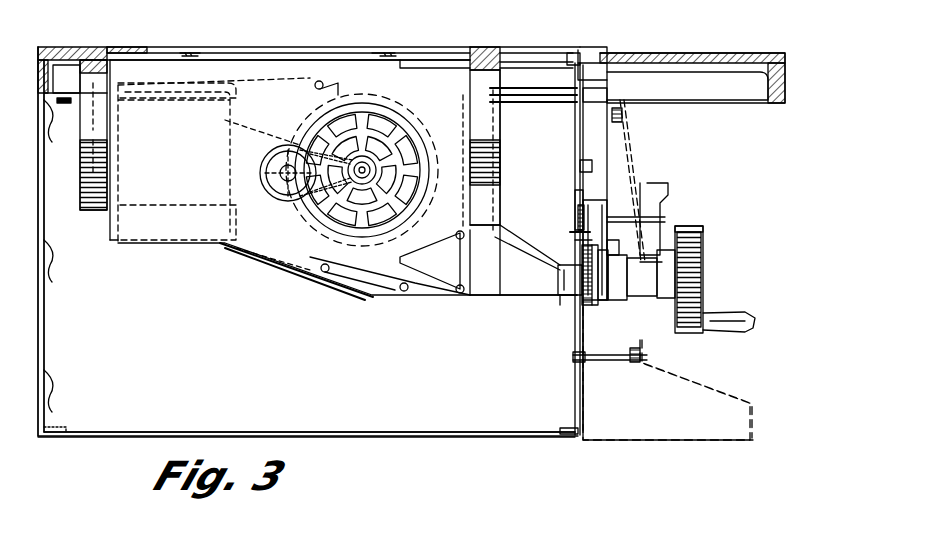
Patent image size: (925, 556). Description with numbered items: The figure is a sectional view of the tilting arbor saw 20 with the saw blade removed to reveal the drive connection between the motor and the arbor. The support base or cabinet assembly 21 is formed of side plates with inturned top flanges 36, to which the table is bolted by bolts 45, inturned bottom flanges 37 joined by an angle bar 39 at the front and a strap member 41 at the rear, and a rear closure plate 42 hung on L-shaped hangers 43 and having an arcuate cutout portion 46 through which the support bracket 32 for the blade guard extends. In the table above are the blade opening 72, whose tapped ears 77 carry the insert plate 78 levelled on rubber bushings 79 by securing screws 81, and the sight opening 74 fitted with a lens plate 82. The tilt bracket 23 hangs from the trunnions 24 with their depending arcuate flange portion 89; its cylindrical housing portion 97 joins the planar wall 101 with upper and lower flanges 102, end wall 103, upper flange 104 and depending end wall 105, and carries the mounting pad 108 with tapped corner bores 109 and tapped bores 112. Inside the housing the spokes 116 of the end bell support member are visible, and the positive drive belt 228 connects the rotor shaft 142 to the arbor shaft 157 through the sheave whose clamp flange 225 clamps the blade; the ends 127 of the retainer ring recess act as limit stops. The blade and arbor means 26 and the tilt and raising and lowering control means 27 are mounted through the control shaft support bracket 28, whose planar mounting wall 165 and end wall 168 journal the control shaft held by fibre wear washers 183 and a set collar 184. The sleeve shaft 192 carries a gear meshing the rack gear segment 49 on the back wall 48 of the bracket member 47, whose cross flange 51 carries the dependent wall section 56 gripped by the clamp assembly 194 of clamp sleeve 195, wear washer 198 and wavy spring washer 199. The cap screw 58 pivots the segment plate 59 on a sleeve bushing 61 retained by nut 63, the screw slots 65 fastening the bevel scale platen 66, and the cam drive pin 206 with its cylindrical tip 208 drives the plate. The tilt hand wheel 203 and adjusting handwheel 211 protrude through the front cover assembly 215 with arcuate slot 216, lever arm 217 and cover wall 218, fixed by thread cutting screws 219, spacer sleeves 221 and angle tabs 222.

The tilting arbor saw 20 is at (175, 434).
The support base or cabinet assembly 21 is at (98, 426).
The tilt bracket 23 is at (225, 240).
The trunnions 24 is at (505, 153).
The blade and arbor means 26 is at (304, 261).
The tilt and raising and lowering control means 27 is at (495, 303).
The control shaft support bracket 28 is at (512, 240).
The support bracket 32 is at (704, 53).
The inturned top flanges 36 is at (82, 93).
The inturned bottom flanges 37 is at (262, 440).
The angle bar 39 is at (565, 428).
The strap member 41 is at (52, 427).
The rear closure plate 42 is at (40, 268).
The L-shaped hangers 43 is at (44, 132).
The bolts 45 is at (70, 104).
The arcuate cutout portion 46 is at (40, 165).
The bracket member 47 is at (572, 232).
The back wall 48 is at (575, 242).
The rack gear segment 49 is at (582, 254).
The cross flange 51 is at (606, 170).
The dependent wall section 56 is at (605, 206).
The cap screw 58 is at (640, 219).
The segment plate 59 is at (576, 135).
The sleeve bushing 61 is at (576, 200).
The nut 63 is at (576, 222).
The screw slots 65 is at (586, 63).
The bevel scale platen 66 is at (600, 50).
The blade opening 72 is at (460, 52).
The sight opening 74 is at (575, 53).
The tapped ears 77 is at (185, 60).
The insert plate 78 is at (140, 47).
The rubber bushings 79 is at (198, 56).
The securing screws 81 is at (192, 50).
The lens plate 82 is at (592, 48).
The depending arcuate flange portion 89 is at (94, 139).
The cylindrical housing portion 97 is at (280, 125).
The planar wall 101 is at (214, 160).
The upper and lower flanges 102 is at (232, 82).
The end wall 103 is at (122, 120).
The upper flange 104 is at (436, 66).
The depending end wall 105 is at (478, 137).
The mounting pad 108 is at (398, 306).
The tapped corner bores 109 is at (458, 280).
The tapped bores 112 is at (315, 88).
The spokes 116 is at (330, 84).
The ends of arcuate recess 127 is at (270, 160).
The rotor shaft 142 is at (362, 168).
The arbor shaft 157 is at (280, 181).
The planar mounting wall 165 is at (520, 182).
The end wall 168 is at (560, 297).
The fibre wear washer 183 is at (584, 300).
The set collar 184 is at (558, 270).
The sleeve shaft 192 is at (592, 305).
The clamp assembly 194 is at (661, 179).
The clamp sleeve 195 is at (600, 250).
The wear washer 198 is at (612, 305).
The wavy spring washer 199 is at (620, 303).
The tilt hand wheel 203 is at (688, 226).
The cam drive pin 206 is at (540, 100).
The cylindrical tip 208 is at (611, 96).
The adjusting handwheel 211 is at (704, 246).
The front cover assembly 215 is at (715, 390).
The arcuate slot 216 is at (662, 298).
The lever arm 217 is at (670, 186).
The cover wall 218 is at (630, 130).
The thread cutting screws 219 is at (575, 360).
The spacer sleeves 221 is at (615, 360).
The angle tabs 222 is at (623, 114).
The clamp flange 225 is at (262, 160).
The positive drive belt 228 is at (340, 118).